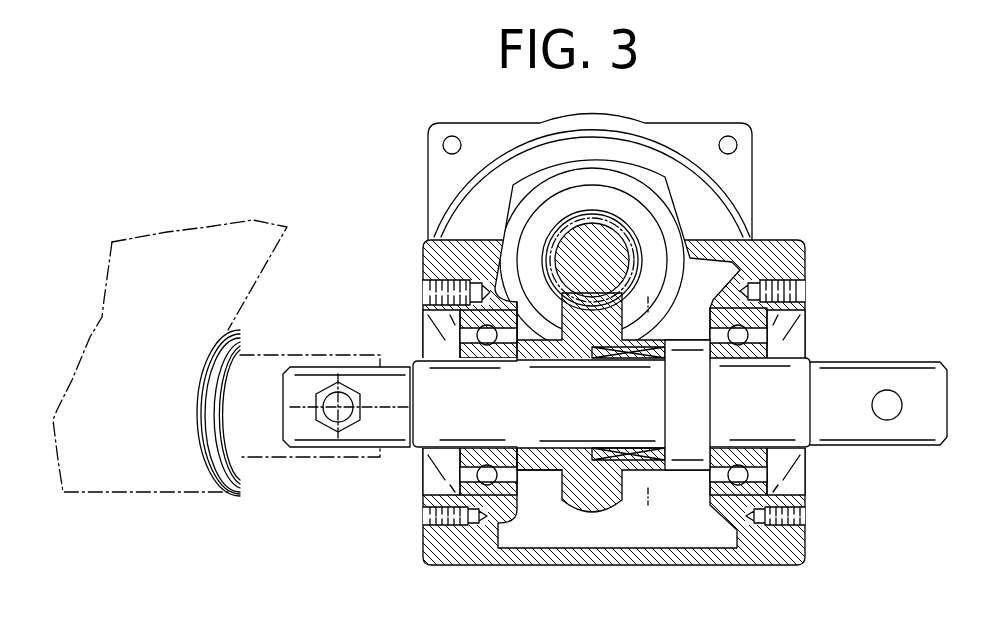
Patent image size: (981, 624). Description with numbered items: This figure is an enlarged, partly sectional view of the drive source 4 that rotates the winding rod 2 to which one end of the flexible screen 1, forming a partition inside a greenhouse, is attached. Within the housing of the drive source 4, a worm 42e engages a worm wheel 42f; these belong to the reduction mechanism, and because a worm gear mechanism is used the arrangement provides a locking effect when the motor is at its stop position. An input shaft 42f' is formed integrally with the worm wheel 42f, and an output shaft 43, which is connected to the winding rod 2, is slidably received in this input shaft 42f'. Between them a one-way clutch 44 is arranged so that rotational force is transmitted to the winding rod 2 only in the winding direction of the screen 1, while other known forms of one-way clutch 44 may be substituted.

The flexible screen 1 is at (233, 230).
The winding rod 2 is at (307, 462).
The drive source 4 is at (810, 167).
The worm 42e is at (575, 233).
The worm wheel 42f is at (611, 429).
The input shaft 42f' is at (538, 499).
The output shaft 43 is at (316, 367).
The one-way clutch 44 is at (669, 350).